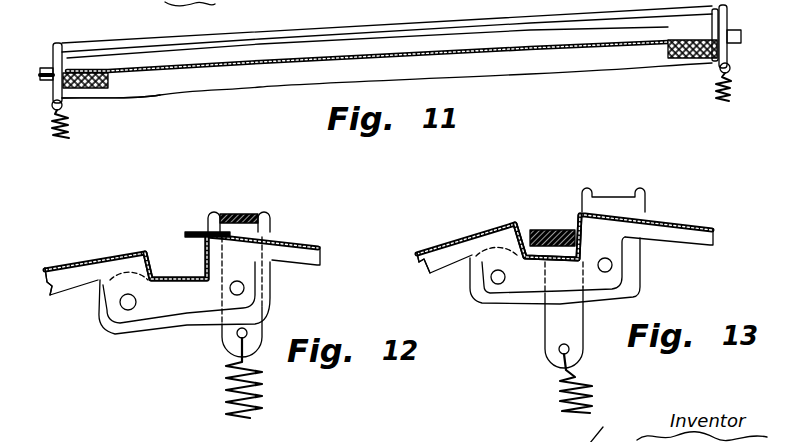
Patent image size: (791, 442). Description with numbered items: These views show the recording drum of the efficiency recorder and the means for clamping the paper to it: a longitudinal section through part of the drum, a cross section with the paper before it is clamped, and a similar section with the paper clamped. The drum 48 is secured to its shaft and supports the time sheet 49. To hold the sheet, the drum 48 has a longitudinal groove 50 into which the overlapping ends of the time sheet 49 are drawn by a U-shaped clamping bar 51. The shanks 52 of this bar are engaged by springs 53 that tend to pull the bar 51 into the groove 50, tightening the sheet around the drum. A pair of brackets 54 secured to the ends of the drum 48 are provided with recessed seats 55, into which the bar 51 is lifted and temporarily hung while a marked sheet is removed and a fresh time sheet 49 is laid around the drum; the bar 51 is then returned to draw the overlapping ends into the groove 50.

In FIG. 11, the drum 48 is at (156, 90).
In FIG. 12, the drum 48 is at (54, 296).
In FIG. 13, the drum 48 is at (417, 256).
In FIG. 11, the time sheet 49 is at (387, 52).
In FIG. 12, the time sheet 49 is at (305, 243).
In FIG. 13, the time sheet 49 is at (692, 219).
In FIG. 11, the longitudinal groove 50 is at (305, 52).
In FIG. 12, the longitudinal groove 50 is at (187, 268).
In FIG. 13, the longitudinal groove 50 is at (522, 258).
In FIG. 11, the U-shaped clamping bar 51 is at (376, 30).
In FIG. 12, the U-shaped clamping bar 51 is at (235, 215).
In FIG. 13, the U-shaped clamping bar 51 is at (543, 232).
In FIG. 11, the shanks 52 is at (53, 60).
In FIG. 12, the shanks 52 is at (263, 310).
In FIG. 13, the shanks 52 is at (580, 315).
In FIG. 11, the springs 53 is at (70, 131).
In FIG. 12, the springs 53 is at (264, 398).
In FIG. 13, the springs 53 is at (560, 387).
In FIG. 12, the brackets 54 is at (272, 230).
In FIG. 13, the brackets 54 is at (633, 257).
In FIG. 13, the recessed seats 55 is at (608, 195).